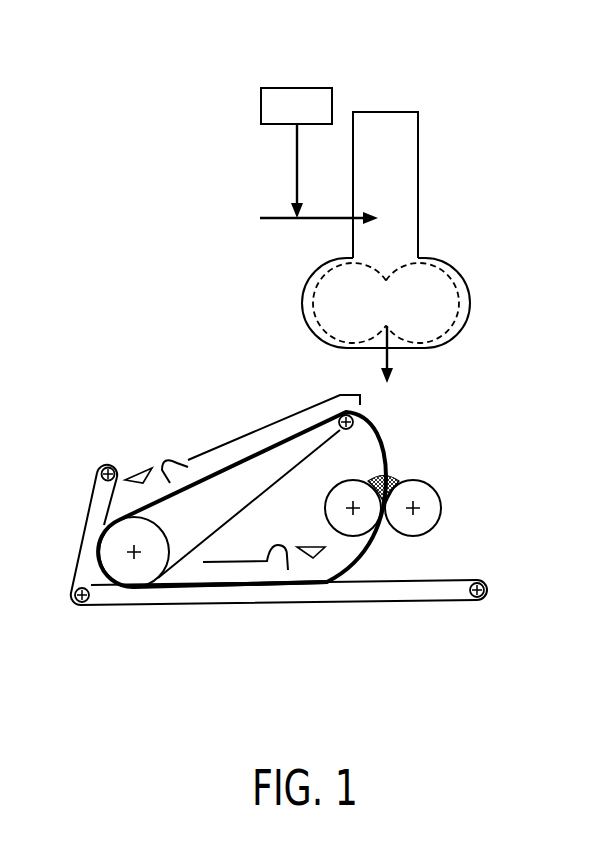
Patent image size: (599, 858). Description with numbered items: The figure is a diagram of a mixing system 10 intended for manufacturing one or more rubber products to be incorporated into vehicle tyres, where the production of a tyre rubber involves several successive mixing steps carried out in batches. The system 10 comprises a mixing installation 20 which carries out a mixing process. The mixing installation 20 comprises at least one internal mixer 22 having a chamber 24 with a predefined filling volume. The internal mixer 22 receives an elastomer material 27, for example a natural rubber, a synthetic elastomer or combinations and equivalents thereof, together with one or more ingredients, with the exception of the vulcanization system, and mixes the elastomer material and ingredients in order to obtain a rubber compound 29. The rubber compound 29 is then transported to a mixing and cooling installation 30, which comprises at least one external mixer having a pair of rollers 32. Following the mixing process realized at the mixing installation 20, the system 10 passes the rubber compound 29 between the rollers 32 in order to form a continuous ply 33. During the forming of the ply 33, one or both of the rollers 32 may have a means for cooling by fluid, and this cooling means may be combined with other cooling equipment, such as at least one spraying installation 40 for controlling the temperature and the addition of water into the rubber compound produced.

The mixing system 10 is at (100, 88).
The mixing installation 20 is at (324, 246).
The internal mixer 22 is at (390, 140).
The chamber 24 is at (430, 280).
The elastomer material 27 is at (285, 118).
The rubber compound 29 is at (387, 477).
The mixing and cooling installation 30 is at (220, 626).
The rollers 32 is at (441, 508).
The continuous ply 33 is at (357, 572).
The spraying installation 40 is at (248, 452).